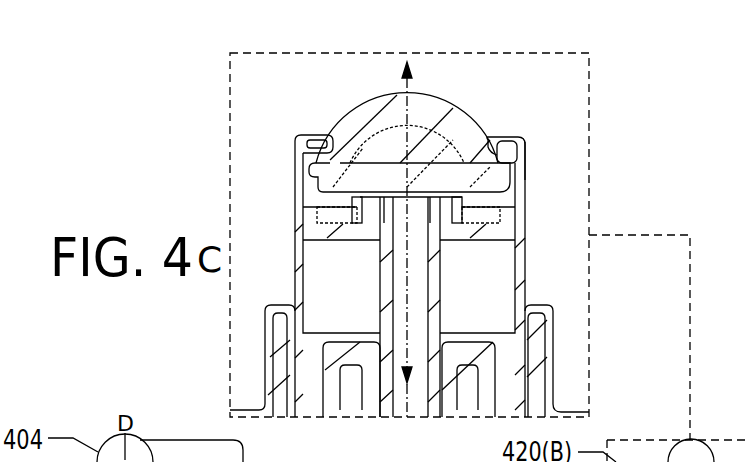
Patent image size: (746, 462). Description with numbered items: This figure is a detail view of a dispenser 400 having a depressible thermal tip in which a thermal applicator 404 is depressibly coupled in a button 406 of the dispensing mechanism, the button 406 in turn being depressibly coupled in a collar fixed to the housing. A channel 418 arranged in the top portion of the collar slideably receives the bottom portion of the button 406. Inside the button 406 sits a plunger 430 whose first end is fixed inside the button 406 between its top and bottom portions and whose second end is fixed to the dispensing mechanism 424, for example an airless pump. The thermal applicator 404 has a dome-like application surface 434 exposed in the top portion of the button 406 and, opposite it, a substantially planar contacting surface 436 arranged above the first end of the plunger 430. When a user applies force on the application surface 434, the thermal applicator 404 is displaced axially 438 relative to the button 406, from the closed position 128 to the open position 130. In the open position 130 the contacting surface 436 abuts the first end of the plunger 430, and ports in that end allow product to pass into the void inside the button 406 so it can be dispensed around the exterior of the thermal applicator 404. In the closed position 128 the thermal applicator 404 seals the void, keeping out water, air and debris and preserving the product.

The dispenser 400 is at (117, 27).
The thermal applicator 404 is at (348, 108).
The button 406 is at (517, 135).
The closed position 128 is at (295, 150).
The open position 130 is at (305, 170).
The channel 418 is at (309, 410).
The dispensing mechanism 424 is at (408, 412).
The plunger 430 is at (313, 205).
The application surface 434 is at (397, 94).
The contacting surface 436 is at (503, 168).
The axial displacement 438 is at (409, 83).